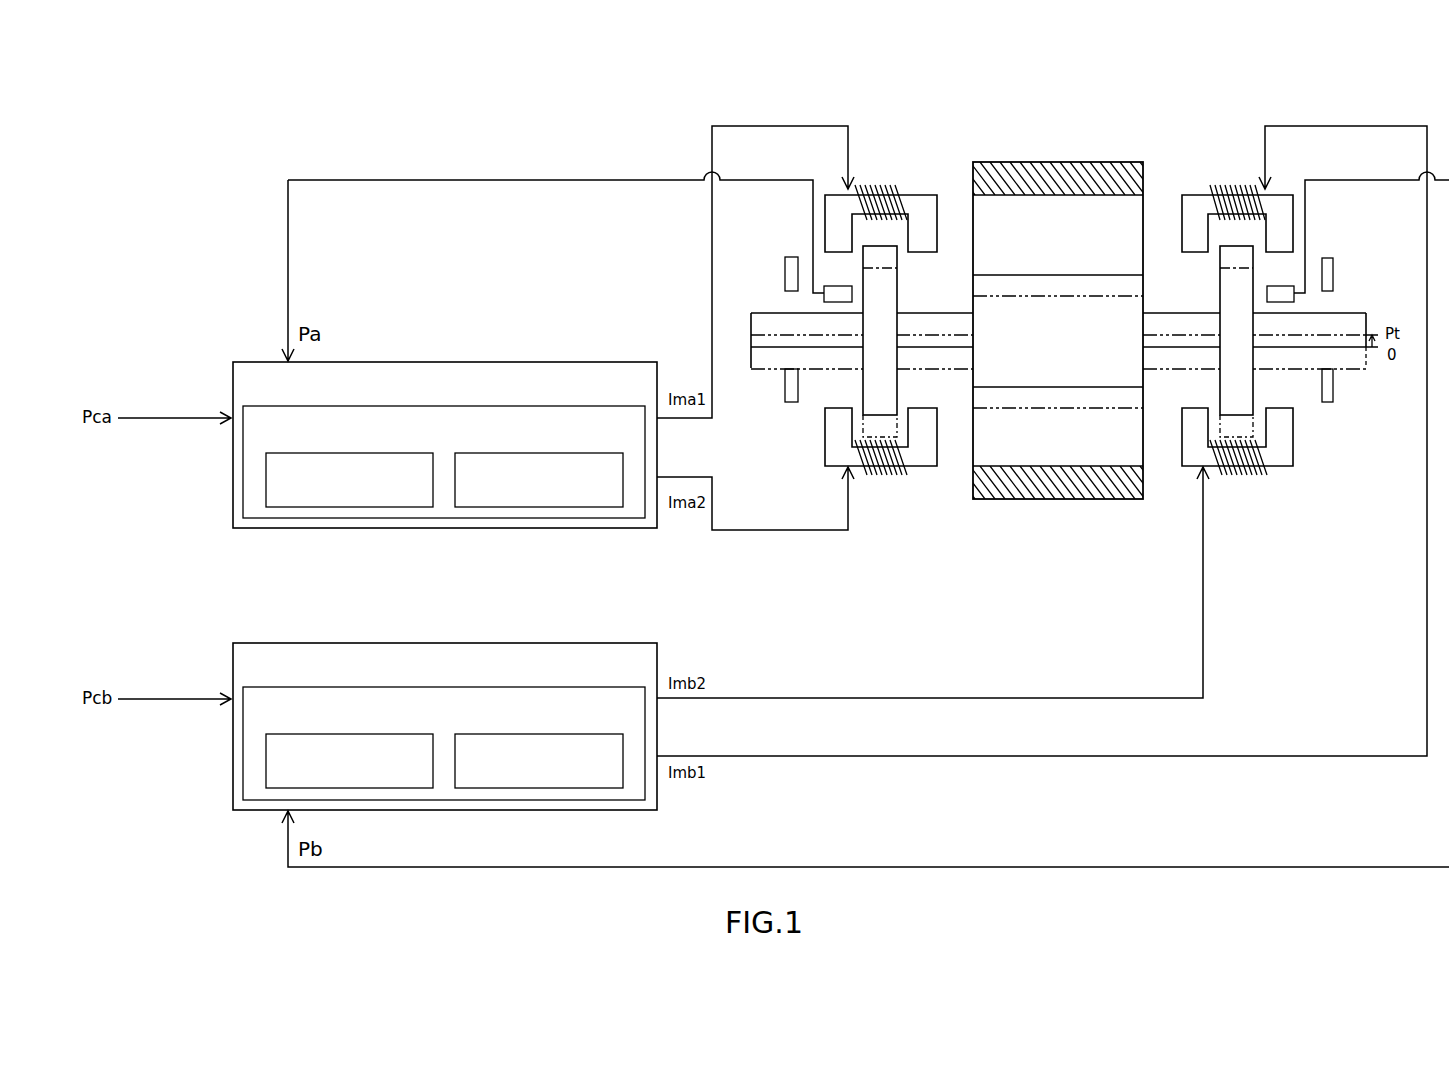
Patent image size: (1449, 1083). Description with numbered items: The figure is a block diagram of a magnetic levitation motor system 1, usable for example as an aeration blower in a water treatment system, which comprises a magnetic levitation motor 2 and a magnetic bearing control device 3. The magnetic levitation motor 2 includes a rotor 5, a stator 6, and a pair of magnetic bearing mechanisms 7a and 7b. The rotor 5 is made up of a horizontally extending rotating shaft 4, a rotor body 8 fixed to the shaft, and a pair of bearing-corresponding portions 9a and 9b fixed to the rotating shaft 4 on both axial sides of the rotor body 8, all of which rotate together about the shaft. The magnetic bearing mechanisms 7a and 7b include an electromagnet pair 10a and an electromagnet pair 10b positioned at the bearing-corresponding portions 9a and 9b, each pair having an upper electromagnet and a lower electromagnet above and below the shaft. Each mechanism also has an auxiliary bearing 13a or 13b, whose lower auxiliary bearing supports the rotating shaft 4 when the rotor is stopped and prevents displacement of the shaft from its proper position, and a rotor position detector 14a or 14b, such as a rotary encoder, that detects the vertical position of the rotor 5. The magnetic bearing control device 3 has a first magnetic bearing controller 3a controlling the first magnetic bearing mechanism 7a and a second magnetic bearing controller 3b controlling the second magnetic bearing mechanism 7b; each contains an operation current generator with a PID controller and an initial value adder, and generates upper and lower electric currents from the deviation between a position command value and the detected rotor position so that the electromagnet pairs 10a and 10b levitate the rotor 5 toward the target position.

The magnetic levitation motor system 1 is at (675, 73).
The magnetic levitation motor 2 is at (1102, 94).
The magnetic bearing control device 3 is at (676, 592).
The first magnetic bearing controller 3a is at (445, 362).
The second magnetic bearing controller 3b is at (445, 643).
The rotating shaft 4 is at (947, 313).
The rotor 5 is at (1153, 291).
The stator 6 is at (1010, 162).
The first magnetic bearing mechanism 7a is at (880, 94).
The second magnetic bearing mechanism 7b is at (1239, 94).
The rotor body 8 is at (1118, 320).
The bearing-corresponding portion 9a is at (897, 375).
The bearing-corresponding portion 9b is at (1218, 375).
The electromagnet pair 10a is at (896, 333).
The electromagnet pair 10b is at (1276, 333).
The auxiliary bearing 13a is at (759, 331).
The auxiliary bearing 13b is at (1367, 331).
The rotor position detector 14a is at (823, 297).
The rotor position detector 14b is at (1295, 298).